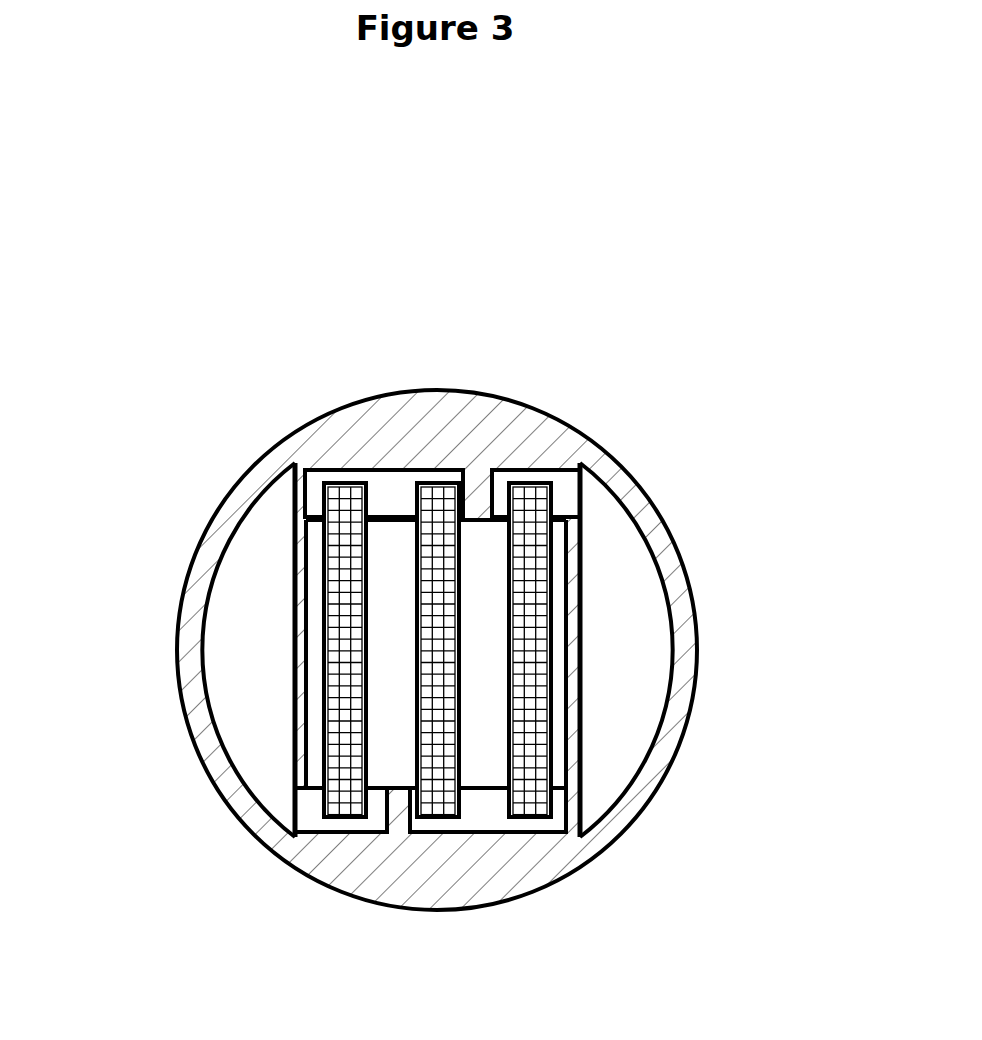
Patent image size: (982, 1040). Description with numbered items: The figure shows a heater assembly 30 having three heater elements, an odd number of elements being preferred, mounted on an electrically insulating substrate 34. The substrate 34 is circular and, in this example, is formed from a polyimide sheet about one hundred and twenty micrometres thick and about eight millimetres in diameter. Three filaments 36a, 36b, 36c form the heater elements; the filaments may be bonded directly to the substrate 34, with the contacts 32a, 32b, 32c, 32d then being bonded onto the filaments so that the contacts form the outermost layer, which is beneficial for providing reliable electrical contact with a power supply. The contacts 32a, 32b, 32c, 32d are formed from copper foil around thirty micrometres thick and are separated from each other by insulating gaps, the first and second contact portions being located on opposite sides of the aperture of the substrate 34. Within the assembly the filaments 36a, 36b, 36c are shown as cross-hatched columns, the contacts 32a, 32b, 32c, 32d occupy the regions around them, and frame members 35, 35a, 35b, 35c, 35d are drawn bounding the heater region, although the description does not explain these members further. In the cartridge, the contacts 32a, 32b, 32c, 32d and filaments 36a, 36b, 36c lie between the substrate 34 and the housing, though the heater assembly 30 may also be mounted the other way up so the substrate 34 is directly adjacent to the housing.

The heater assembly 30 is at (565, 243).
The substrate 34 is at (518, 423).
The contact 32a is at (240, 682).
The contact 32b is at (634, 587).
The contact 32c is at (423, 477).
The contact 32d is at (502, 830).
The coil 35 is at (378, 542).
The first coil frame side 35a is at (306, 582).
The second coil frame side 35b is at (567, 681).
The coil frame top 35c is at (470, 522).
The coil frame bottom 35d is at (393, 784).
The filament 36a is at (333, 813).
The filament 36b is at (445, 808).
The filament 36c is at (532, 810).